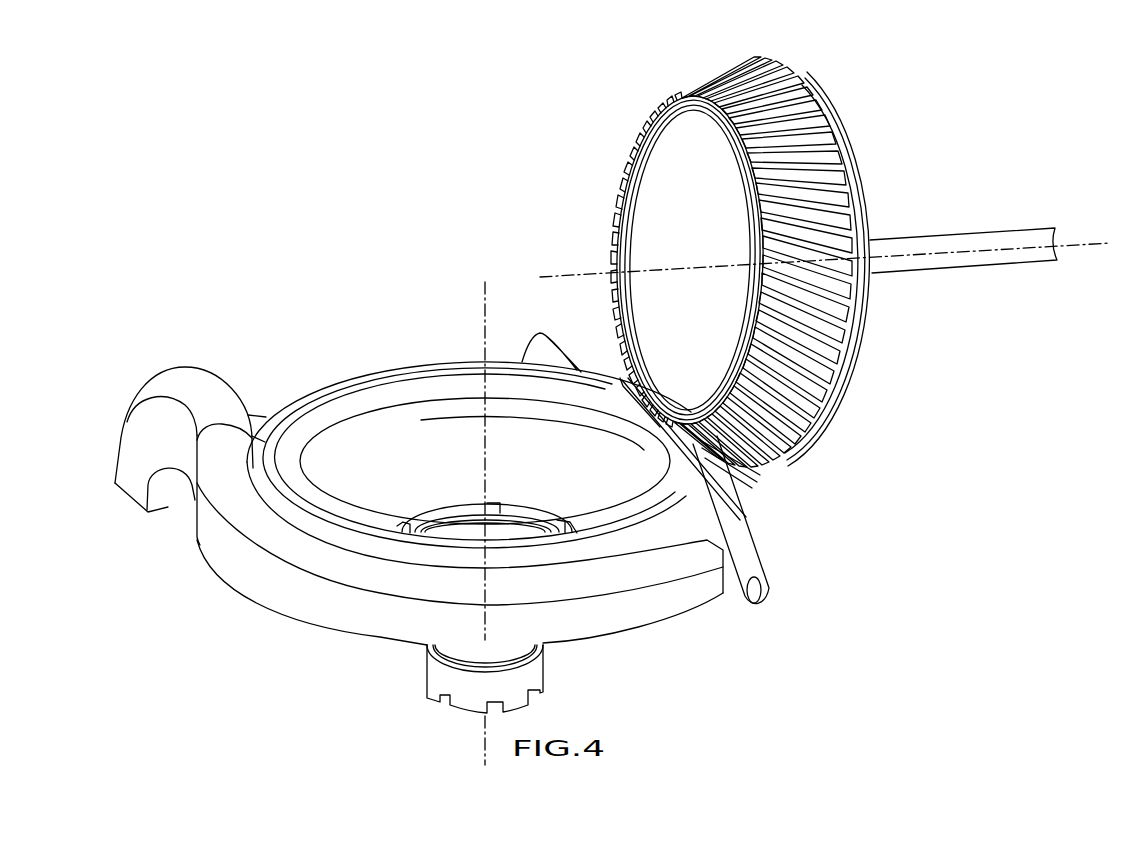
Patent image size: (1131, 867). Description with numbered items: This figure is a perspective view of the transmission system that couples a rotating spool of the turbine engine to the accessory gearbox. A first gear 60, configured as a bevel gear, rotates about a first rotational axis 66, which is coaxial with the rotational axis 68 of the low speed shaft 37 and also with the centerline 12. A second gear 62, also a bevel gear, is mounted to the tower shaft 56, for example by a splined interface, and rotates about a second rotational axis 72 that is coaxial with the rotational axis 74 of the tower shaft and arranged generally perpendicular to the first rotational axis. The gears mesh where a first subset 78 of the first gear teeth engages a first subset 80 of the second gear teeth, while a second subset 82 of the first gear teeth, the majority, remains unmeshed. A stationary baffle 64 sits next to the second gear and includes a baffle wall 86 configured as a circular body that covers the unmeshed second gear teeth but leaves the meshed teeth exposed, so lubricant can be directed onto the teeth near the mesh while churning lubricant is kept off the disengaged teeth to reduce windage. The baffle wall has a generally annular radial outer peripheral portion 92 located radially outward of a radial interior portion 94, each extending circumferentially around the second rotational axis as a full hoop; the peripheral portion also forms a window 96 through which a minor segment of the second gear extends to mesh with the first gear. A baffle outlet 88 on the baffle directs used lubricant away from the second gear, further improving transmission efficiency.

The centerline 12 is at (806, 253).
The low speed shaft 37 is at (1003, 228).
The tower shaft 56 is at (423, 673).
The first gear 60 is at (831, 426).
The second gear 62 is at (748, 540).
The baffle 64 is at (366, 358).
The first rotational axis 66 is at (806, 253).
The rotational axis 68 is at (553, 278).
The second rotational axis 72 is at (447, 502).
The rotational axis 74 is at (484, 314).
The first subset 78 is at (779, 478).
The first subset 80 is at (767, 491).
The second subset 82 is at (670, 73).
The baffle wall 86 is at (318, 420).
The baffle outlet 88 is at (170, 378).
The radial outer peripheral portion 92 is at (285, 420).
The radial interior portion 94 is at (430, 410).
The window 96 is at (755, 517).